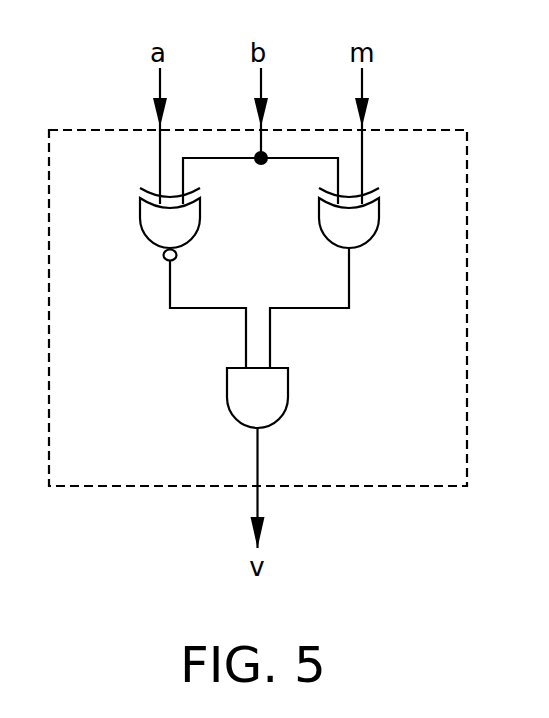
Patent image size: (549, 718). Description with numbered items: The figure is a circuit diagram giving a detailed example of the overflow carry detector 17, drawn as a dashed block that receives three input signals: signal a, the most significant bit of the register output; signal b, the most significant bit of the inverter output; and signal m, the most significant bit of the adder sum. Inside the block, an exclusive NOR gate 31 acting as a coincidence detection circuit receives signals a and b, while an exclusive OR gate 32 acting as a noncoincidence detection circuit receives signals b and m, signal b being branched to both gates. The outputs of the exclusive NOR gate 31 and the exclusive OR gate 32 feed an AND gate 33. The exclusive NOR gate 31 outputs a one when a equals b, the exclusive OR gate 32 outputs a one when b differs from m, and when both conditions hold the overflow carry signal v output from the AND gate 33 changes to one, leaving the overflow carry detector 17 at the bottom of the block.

The overflow carry detector 17 is at (155, 457).
The exclusive NOR gate 31 is at (150, 240).
The exclusive OR gate 32 is at (365, 242).
The AND gate 33 is at (282, 405).